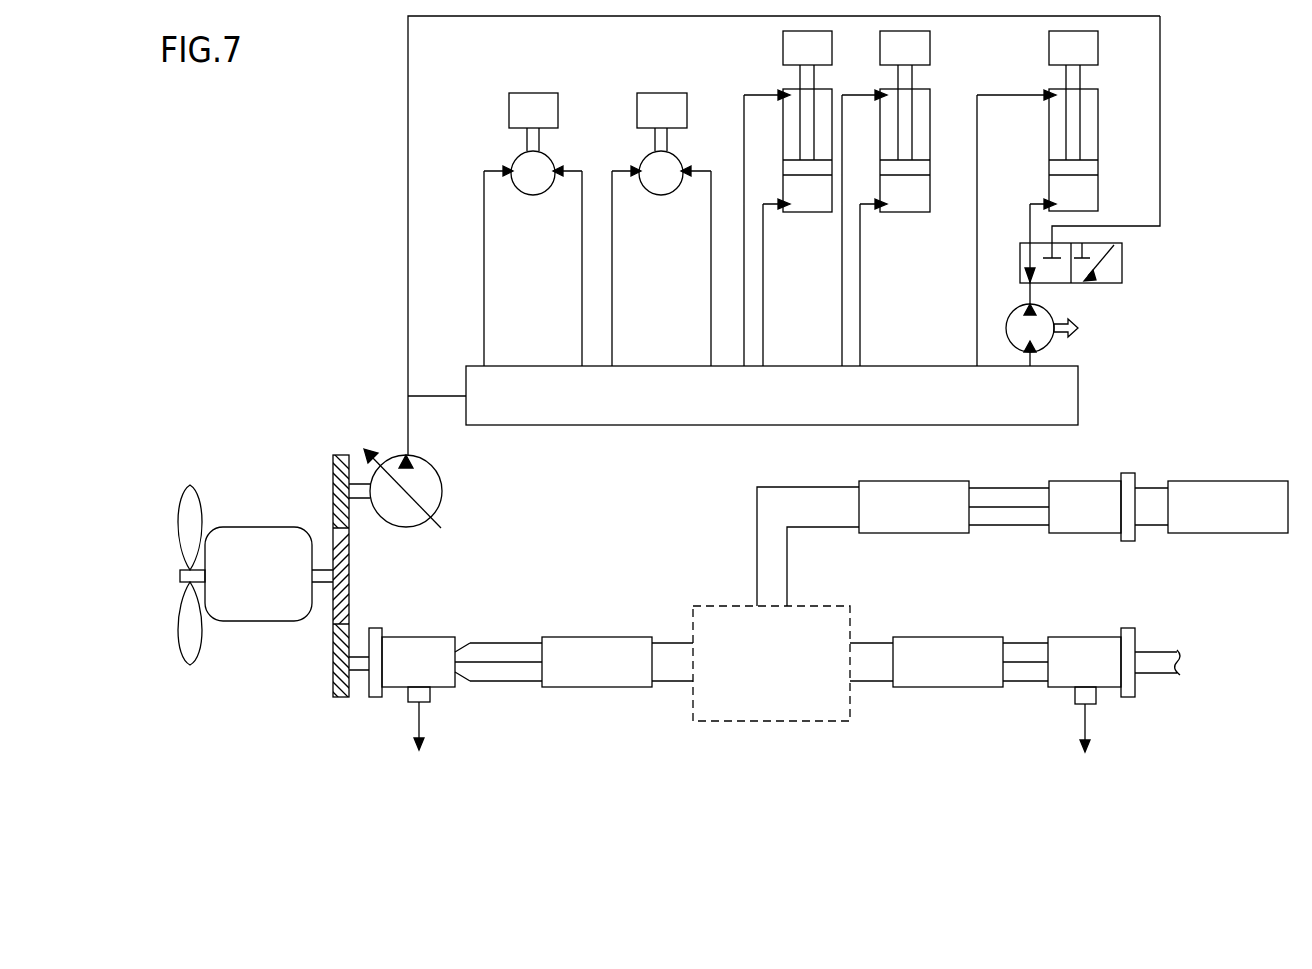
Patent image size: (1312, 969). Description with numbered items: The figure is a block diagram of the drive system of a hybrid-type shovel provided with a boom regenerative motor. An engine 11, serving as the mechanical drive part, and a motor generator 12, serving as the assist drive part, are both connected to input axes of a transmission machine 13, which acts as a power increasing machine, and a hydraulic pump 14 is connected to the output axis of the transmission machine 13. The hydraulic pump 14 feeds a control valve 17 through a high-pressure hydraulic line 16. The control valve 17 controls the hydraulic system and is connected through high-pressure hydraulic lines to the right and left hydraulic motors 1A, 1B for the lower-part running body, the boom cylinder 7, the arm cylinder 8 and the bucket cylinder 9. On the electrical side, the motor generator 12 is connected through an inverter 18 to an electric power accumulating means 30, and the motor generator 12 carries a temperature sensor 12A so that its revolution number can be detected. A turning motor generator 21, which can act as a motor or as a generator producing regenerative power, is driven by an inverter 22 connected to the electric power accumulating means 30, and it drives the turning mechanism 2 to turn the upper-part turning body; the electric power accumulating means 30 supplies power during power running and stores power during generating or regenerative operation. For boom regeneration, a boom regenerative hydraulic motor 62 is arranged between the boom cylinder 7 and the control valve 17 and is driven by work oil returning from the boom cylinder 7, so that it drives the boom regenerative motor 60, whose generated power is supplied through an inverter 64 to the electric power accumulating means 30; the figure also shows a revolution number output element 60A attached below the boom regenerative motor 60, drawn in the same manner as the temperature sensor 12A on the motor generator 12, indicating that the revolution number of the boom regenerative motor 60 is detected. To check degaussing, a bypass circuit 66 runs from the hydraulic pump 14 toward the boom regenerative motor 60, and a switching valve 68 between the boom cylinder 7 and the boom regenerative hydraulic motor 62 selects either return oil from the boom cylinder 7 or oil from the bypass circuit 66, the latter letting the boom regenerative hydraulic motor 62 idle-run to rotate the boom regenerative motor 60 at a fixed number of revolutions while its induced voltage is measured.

The hydraulic motor (for right) 1A is at (661, 195).
The hydraulic motor (for left) 1B is at (533, 195).
The turning mechanism 2 is at (1224, 481).
The boom cylinder 7 is at (1098, 120).
The arm cylinder 8 is at (930, 120).
The bucket cylinder 9 is at (783, 120).
The engine 11 is at (259, 525).
The motor generator 12 is at (405, 637).
The temperature sensor 12A is at (430, 696).
The transmission machine 13 is at (349, 578).
The hydraulic pump 14 is at (443, 480).
The high-pressure hydraulic line 16 is at (443, 392).
The control valve 17 is at (656, 427).
The inverter 18 is at (597, 637).
The turning motor generator 21 is at (1086, 481).
The inverter 22 is at (916, 481).
The electric power accumulating means 30 is at (767, 723).
The boom regenerative motor 60 is at (1086, 637).
The revolution number sensor 60A is at (1096, 702).
The boom regenerative hydraulic motor 62 is at (1054, 312).
The inverter 64 is at (952, 637).
The bypass circuit 66 is at (1160, 120).
The switching valve 68 is at (1122, 263).